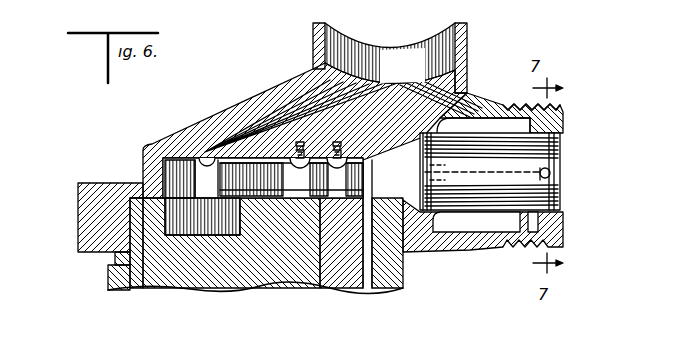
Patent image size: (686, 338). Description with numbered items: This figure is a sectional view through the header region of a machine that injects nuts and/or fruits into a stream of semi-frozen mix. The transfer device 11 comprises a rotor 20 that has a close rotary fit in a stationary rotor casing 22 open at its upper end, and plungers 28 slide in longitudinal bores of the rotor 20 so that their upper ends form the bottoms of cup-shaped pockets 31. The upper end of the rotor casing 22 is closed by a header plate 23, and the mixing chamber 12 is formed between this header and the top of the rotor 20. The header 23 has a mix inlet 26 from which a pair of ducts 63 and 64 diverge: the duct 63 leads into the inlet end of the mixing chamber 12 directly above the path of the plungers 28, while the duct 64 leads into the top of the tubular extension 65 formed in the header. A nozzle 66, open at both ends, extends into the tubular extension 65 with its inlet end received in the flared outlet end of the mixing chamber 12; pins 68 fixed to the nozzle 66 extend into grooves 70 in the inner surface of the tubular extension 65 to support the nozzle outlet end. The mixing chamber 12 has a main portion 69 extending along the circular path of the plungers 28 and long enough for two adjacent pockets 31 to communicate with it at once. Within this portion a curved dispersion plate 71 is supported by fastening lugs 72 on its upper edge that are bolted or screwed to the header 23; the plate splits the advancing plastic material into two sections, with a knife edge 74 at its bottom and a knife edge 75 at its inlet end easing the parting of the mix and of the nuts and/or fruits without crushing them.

The transfer device 11 is at (308, 270).
The mixing chamber 12 is at (165, 165).
The rotor 20 is at (273, 268).
The rotor casing 22 is at (110, 288).
The header plate 23 is at (86, 203).
The mix inlet 26 is at (401, 55).
The plungers 28 is at (350, 272).
The pockets 31 is at (133, 250).
The duct 63 is at (290, 105).
The duct 64 is at (472, 80).
The tubular extension 65 is at (565, 110).
The nozzle 66 is at (475, 218).
The pins 68 is at (551, 173).
The main portion 69 is at (313, 157).
The grooves 70 is at (568, 192).
The dispersion plate 71 is at (348, 186).
The fastening lugs 72 is at (343, 166).
The knife edge 74 is at (258, 200).
The knife edge 75 is at (213, 172).